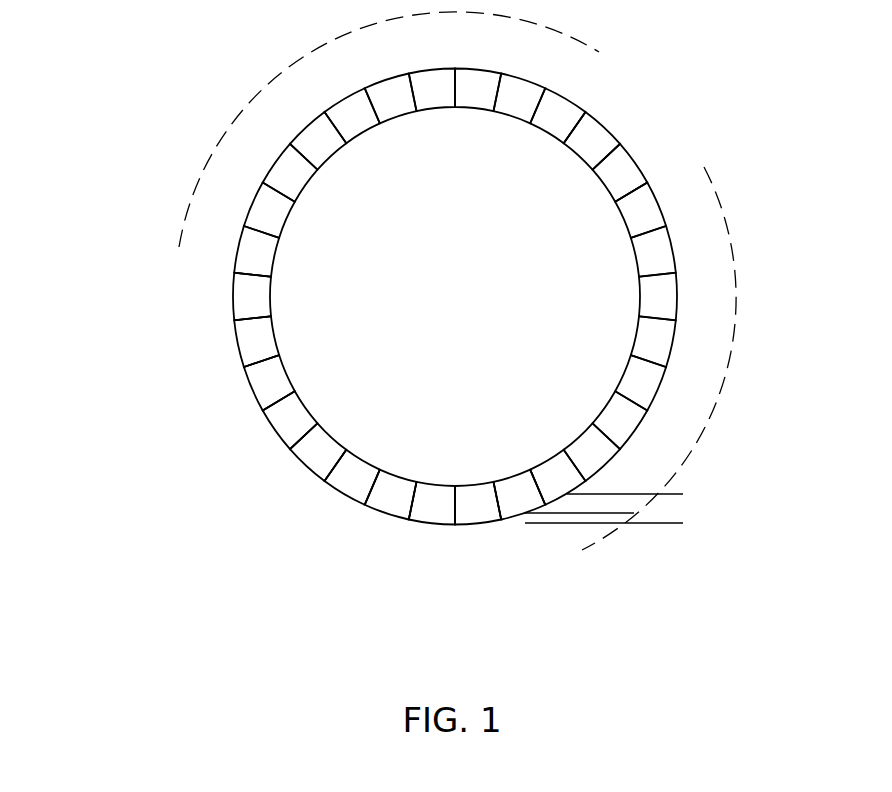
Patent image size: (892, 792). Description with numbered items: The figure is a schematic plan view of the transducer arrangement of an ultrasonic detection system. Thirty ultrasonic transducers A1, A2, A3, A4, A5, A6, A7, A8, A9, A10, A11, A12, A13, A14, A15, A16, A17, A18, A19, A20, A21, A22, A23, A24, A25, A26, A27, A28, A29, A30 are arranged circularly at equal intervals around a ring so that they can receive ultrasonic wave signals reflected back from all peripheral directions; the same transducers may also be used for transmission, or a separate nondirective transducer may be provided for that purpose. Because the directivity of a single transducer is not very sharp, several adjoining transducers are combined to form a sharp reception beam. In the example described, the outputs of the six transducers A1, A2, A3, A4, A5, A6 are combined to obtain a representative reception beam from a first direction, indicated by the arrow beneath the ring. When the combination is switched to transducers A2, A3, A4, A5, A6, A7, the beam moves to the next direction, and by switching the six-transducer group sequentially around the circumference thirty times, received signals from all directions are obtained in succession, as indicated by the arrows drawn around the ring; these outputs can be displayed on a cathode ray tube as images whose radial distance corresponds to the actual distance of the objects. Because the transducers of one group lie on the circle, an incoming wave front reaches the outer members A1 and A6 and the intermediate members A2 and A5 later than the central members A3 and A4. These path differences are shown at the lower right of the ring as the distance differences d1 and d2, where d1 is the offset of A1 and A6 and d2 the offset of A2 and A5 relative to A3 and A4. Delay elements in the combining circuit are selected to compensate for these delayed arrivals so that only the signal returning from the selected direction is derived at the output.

The ultrasonic transducer A1 is at (557, 477).
The ultrasonic transducer A2 is at (520, 495).
The ultrasonic transducer A3 is at (478, 503).
The ultrasonic transducer A4 is at (432, 503).
The ultrasonic transducer A5 is at (391, 495).
The ultrasonic transducer A6 is at (352, 477).
The ultrasonic transducer A7 is at (318, 452).
The ultrasonic transducer A8 is at (290, 420).
The ultrasonic transducer A9 is at (269, 382).
The ultrasonic transducer A10 is at (256, 341).
The ultrasonic transducer A11 is at (252, 297).
The ultrasonic transducer A12 is at (256, 251).
The ultrasonic transducer A13 is at (269, 210).
The ultrasonic transducer A14 is at (290, 173).
The ultrasonic transducer A15 is at (318, 141).
The ultrasonic transducer A16 is at (352, 115).
The ultrasonic transducer A17 is at (391, 99).
The ultrasonic transducer A18 is at (432, 90).
The ultrasonic transducer A19 is at (478, 90).
The ultrasonic transducer A20 is at (520, 99).
The ultrasonic transducer A21 is at (557, 115).
The ultrasonic transducer A22 is at (592, 141).
The ultrasonic transducer A23 is at (620, 173).
The ultrasonic transducer A24 is at (640, 210).
The ultrasonic transducer A25 is at (653, 251).
The ultrasonic transducer A26 is at (658, 297).
The ultrasonic transducer A27 is at (653, 341).
The ultrasonic transducer A28 is at (640, 382).
The ultrasonic transducer A29 is at (620, 420).
The ultrasonic transducer A30 is at (592, 452).
The distance difference d1 is at (676, 494).
The distance difference d2 is at (629, 498).